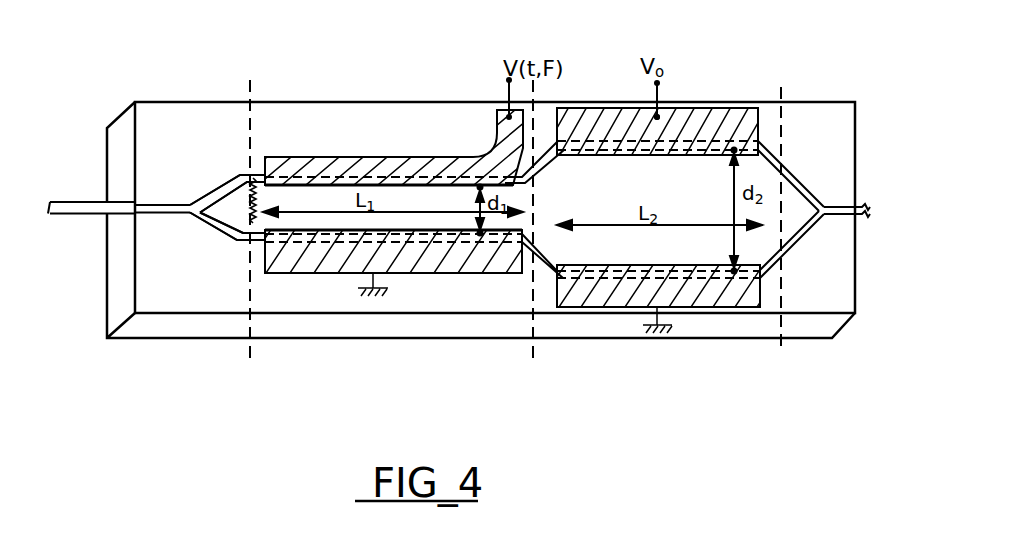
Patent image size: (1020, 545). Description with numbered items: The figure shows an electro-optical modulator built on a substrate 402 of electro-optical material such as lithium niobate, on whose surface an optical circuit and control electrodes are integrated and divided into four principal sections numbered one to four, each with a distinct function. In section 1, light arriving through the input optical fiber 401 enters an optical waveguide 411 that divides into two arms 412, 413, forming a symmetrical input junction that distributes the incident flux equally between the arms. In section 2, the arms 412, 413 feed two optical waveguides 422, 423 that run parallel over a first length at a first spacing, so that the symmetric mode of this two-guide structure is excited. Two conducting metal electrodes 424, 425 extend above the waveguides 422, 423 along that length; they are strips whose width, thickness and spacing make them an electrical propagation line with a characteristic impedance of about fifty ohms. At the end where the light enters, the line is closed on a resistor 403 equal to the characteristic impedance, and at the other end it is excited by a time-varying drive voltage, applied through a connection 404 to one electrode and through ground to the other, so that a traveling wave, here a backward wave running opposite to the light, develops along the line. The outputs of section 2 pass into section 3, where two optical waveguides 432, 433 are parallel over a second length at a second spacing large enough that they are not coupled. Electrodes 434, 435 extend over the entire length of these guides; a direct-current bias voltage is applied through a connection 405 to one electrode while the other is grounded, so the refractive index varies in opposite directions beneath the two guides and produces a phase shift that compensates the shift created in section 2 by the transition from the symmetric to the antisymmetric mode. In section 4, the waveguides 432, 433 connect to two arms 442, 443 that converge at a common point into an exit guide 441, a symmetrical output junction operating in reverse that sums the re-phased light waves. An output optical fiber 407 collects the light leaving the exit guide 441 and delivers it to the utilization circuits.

The section 1 is at (150, 350).
The section 2 is at (320, 350).
The section 3 is at (590, 350).
The section 4 is at (822, 350).
The input optical fiber 401 is at (67, 210).
The substrate 402 is at (154, 120).
The resistor 403 is at (213, 206).
The connection 404 is at (507, 93).
The connection 405 is at (660, 96).
The optical fiber 407 is at (869, 198).
The optical waveguide 411 is at (164, 213).
The arm 412 is at (214, 187).
The arm 413 is at (215, 231).
The optical waveguide 422 is at (407, 165).
The optical waveguide 423 is at (418, 260).
The conducting electrode 424 is at (335, 165).
The conducting electrode 425 is at (323, 258).
The optical waveguide 432 is at (595, 156).
The optical waveguide 433 is at (592, 265).
The electrode 434 is at (606, 112).
The electrode 435 is at (714, 308).
The exit guide 441 is at (838, 217).
The arm 442 is at (802, 181).
The arm 443 is at (794, 245).